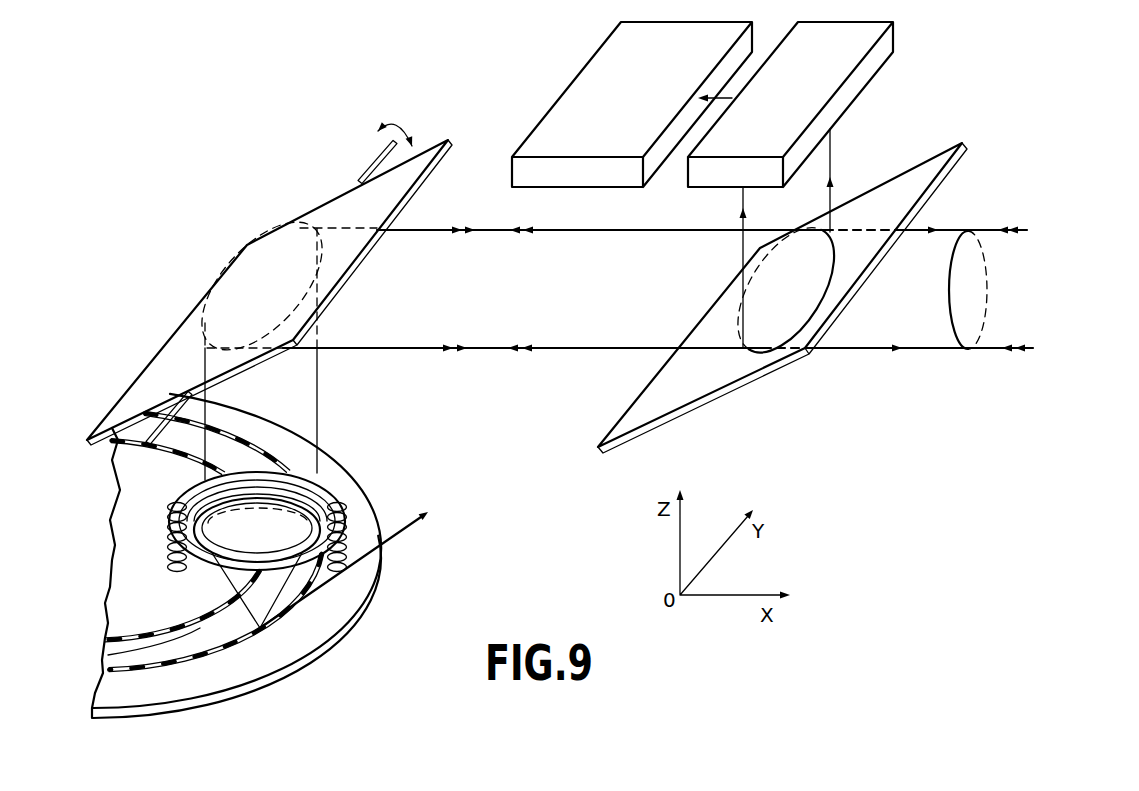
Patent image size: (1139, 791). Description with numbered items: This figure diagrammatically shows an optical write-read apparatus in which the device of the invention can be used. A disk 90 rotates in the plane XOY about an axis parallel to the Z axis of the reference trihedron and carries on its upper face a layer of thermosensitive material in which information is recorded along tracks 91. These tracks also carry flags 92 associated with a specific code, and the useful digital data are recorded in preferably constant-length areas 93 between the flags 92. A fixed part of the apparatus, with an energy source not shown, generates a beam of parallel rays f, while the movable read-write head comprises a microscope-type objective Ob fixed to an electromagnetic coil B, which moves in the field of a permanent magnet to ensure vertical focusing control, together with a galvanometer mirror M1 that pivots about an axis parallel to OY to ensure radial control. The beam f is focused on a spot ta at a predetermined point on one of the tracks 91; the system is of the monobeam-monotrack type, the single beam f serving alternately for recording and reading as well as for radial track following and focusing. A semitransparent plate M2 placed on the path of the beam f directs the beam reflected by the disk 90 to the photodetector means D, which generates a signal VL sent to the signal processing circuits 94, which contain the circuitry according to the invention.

The signal processing circuits 94 is at (581, 72).
The photodetector means D is at (922, 93).
The signal VL is at (732, 98).
The galvanometer mirror M1 is at (205, 300).
The semitransparent plate M2 is at (921, 158).
The beam of parallel rays f is at (973, 236).
The disk 90 is at (378, 612).
The tracks 91 is at (125, 642).
The flags 92 is at (175, 630).
The areas 93 is at (152, 610).
The spot ta is at (264, 628).
The electromagnetic coil B is at (330, 492).
The microscope-type objective Ob is at (347, 517).